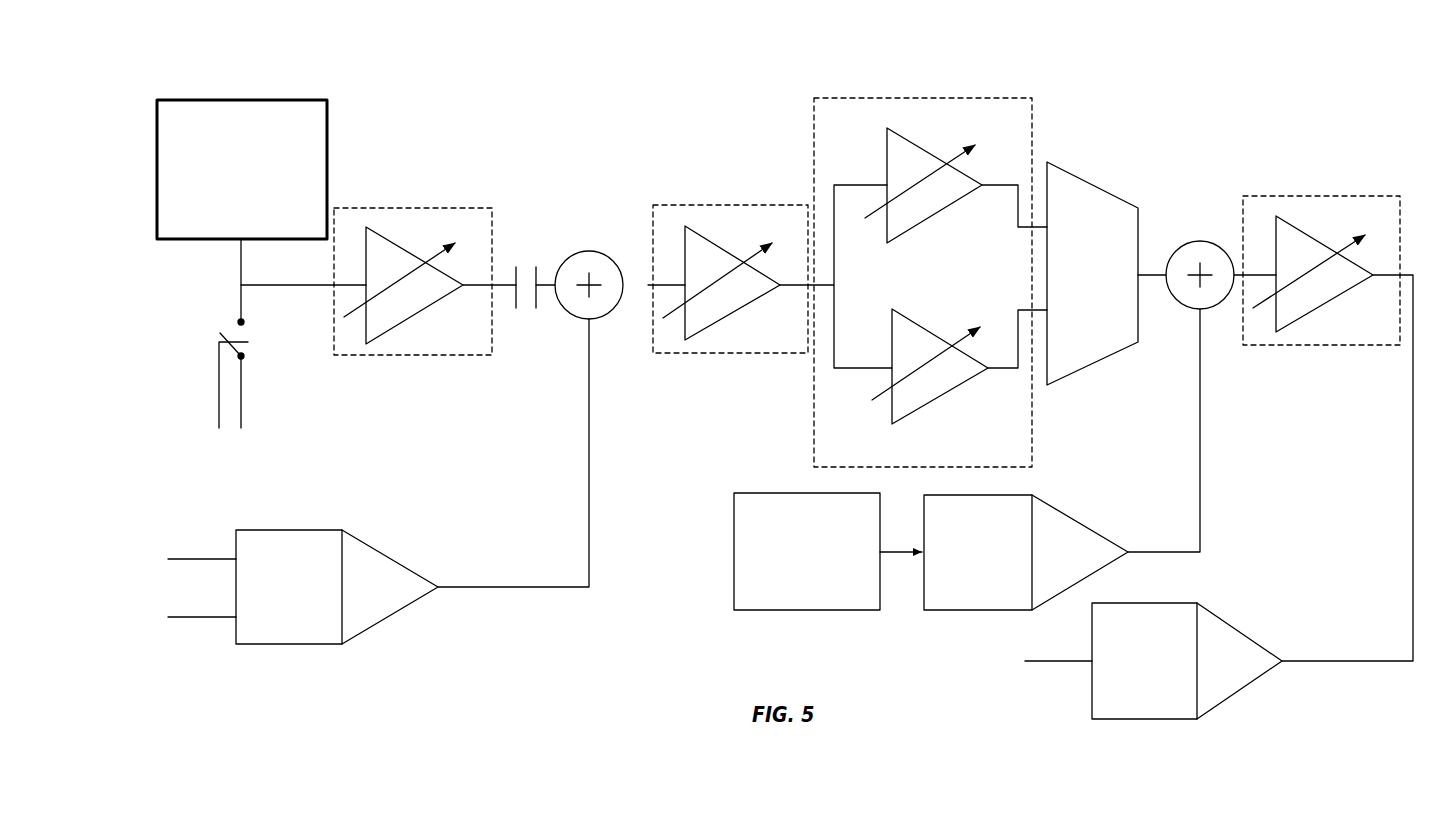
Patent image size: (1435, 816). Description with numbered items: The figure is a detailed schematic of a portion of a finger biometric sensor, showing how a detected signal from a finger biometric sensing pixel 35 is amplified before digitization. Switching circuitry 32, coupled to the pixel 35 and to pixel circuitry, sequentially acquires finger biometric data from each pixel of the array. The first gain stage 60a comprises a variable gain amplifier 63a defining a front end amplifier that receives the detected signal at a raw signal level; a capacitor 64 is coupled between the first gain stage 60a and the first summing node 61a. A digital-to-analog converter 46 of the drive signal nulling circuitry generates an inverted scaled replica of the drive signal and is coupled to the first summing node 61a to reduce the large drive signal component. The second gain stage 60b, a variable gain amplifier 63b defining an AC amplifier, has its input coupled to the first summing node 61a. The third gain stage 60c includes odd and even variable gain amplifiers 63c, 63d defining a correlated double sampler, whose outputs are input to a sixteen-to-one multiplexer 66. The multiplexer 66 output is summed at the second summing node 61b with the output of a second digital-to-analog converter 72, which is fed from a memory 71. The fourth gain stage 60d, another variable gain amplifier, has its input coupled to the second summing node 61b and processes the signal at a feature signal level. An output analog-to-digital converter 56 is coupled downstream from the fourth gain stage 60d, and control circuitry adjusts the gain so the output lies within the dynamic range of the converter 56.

The finger biometric sensing pixel 35 is at (222, 100).
The switching circuitry 32 is at (231, 331).
The first gain stage 60a is at (390, 207).
The variable gain amplifier 63a is at (405, 250).
The capacitor 64 is at (516, 265).
The first summing node 61a is at (589, 251).
The digital-to-analog converter 46 is at (305, 645).
The second gain stage 60b is at (703, 204).
The variable gain amplifier 63b is at (718, 246).
The third gain stage 60c is at (870, 97).
The odd variable gain amplifier 63c is at (935, 152).
The even variable gain amplifier 63d is at (947, 397).
The multiplexer 66 is at (1103, 188).
The second summing node 61b is at (1200, 241).
The fourth gain stage 60d is at (1320, 195).
The memory 71 is at (825, 611).
The second digital-to-analog converter 72 is at (983, 611).
The output analog-to-digital converter 56 is at (1152, 720).